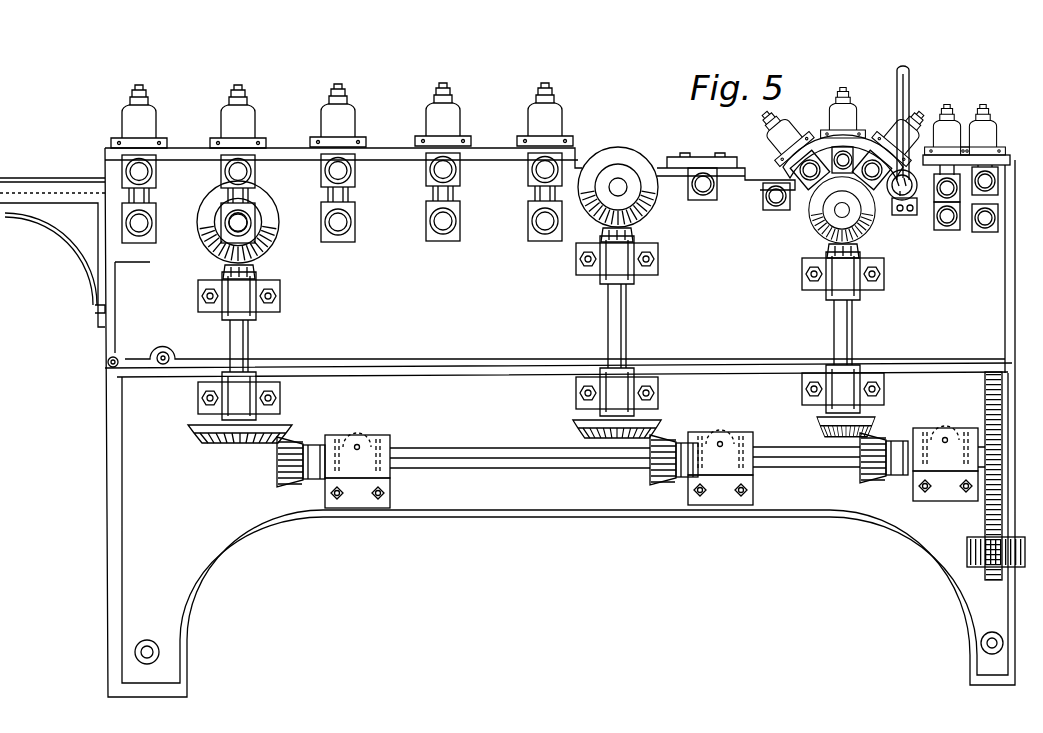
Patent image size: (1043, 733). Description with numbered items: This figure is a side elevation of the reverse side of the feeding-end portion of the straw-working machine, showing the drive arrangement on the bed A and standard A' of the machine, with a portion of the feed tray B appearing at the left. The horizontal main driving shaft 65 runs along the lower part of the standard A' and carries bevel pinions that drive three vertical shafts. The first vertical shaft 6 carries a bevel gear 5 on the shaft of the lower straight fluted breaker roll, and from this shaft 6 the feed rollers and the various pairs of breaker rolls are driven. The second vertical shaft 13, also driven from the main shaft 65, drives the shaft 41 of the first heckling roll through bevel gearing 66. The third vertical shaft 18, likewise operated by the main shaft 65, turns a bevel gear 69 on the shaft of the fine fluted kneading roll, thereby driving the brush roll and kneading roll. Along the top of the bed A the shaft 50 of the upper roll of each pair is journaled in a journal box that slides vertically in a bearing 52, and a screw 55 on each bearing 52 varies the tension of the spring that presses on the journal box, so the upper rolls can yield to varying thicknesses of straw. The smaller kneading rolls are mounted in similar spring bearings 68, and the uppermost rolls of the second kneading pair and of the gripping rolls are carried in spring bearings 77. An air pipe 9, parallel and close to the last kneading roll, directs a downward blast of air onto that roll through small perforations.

The bed A is at (560, 422).
The standard A' is at (107, 505).
The feed tray B is at (72, 240).
The bevel gear 5 is at (206, 240).
The vertical shaft 6 is at (244, 353).
The air pipe 9 is at (909, 115).
The vertical shaft 13 is at (622, 330).
The vertical shaft 18 is at (848, 330).
The shaft of the heckling roll 41 is at (618, 187).
The shaft 50 is at (137, 172).
The bearing 52 is at (148, 130).
The screw 55 is at (146, 96).
The horizontal shaft 65 is at (537, 458).
The bevel gearing 66 is at (648, 208).
The spring bearings 68 is at (789, 142).
The bevel gear 69 is at (868, 208).
The spring bearings 77 is at (948, 140).